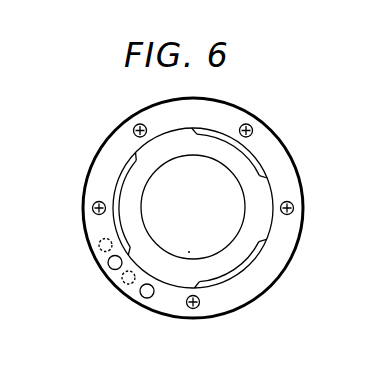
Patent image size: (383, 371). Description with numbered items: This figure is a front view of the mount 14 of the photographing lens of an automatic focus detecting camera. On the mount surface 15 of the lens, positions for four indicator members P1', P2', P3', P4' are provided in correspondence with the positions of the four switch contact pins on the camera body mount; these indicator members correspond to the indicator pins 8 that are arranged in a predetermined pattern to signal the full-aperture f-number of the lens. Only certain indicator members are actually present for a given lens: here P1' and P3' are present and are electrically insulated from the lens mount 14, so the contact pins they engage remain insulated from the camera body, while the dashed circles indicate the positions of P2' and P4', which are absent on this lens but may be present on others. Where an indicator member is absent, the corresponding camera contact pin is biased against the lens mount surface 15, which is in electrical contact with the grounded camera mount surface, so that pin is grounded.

The lens mount 14 is at (297, 160).
The mount surface of the lens 15 is at (288, 178).
The indicator pins 8 is at (95, 295).
The indicator member P1' is at (138, 317).
The indicator member P2' is at (113, 302).
The indicator member P3' is at (93, 284).
The indicator member P4' is at (84, 260).